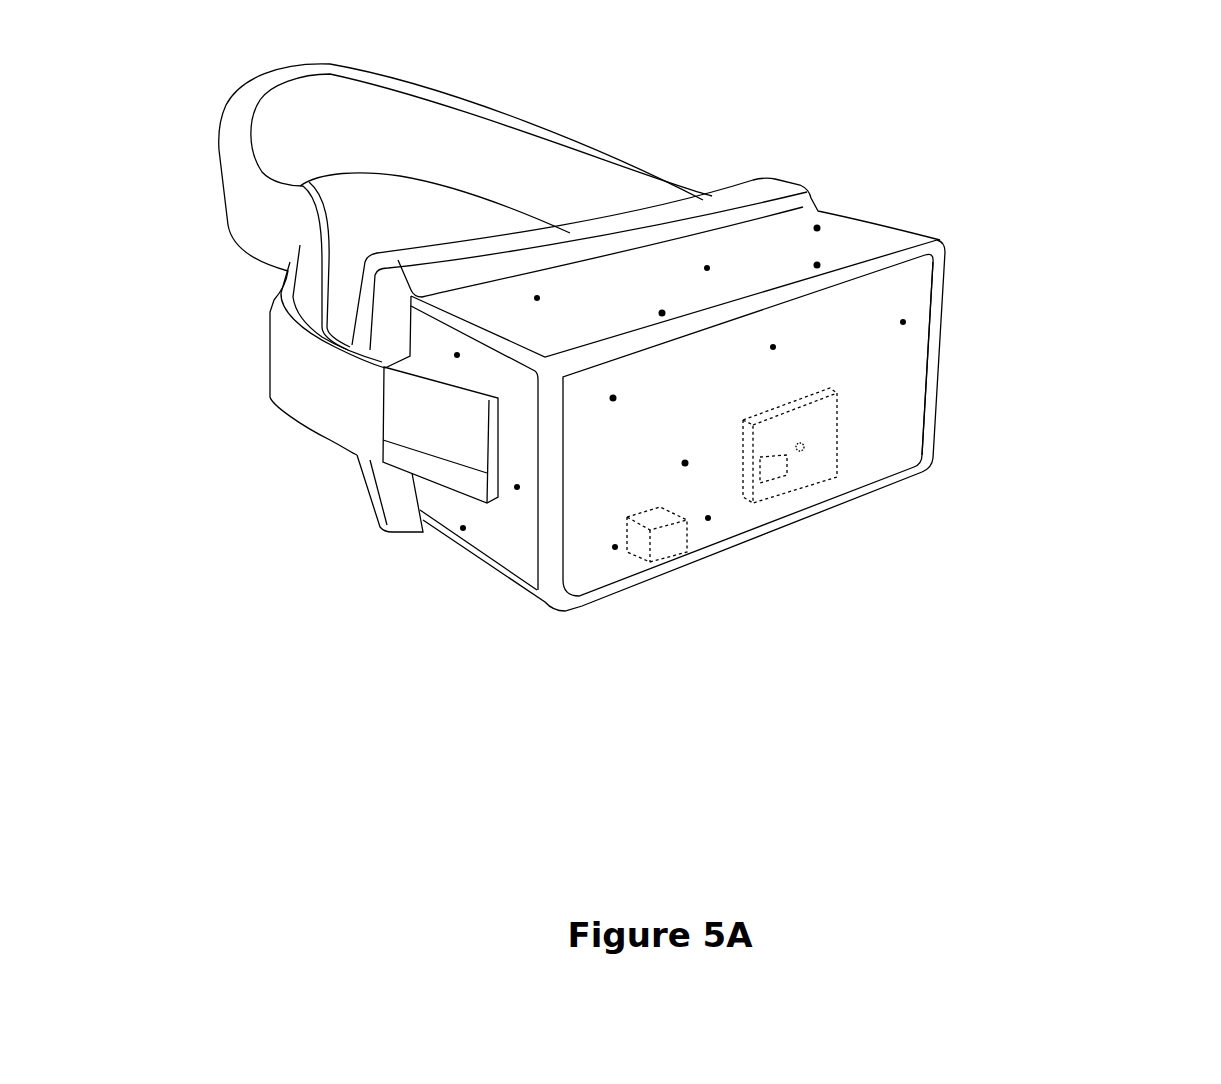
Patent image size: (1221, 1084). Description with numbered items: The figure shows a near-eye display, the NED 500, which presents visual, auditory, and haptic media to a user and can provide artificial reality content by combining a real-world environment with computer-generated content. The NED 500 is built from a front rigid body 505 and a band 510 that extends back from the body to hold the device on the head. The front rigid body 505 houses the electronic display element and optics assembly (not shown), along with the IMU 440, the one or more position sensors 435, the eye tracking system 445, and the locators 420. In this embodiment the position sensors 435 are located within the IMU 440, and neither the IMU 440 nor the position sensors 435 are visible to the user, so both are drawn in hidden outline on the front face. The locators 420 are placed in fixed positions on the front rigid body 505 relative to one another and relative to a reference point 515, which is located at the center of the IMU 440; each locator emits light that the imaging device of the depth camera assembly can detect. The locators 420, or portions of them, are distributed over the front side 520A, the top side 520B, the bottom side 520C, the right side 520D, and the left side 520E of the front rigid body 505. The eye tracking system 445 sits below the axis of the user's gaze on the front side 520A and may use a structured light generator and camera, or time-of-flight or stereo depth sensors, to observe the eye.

The NED 500 is at (197, 486).
The front rigid body 505 is at (671, 455).
The band 510 is at (589, 141).
The reference point 515 is at (804, 452).
The locators 420 is at (906, 427).
The position sensors 435 is at (773, 486).
The IMU 440 is at (982, 556).
The eye tracking system 445 is at (666, 553).
The front side 520A is at (598, 574).
The top side 520B is at (506, 300).
The bottom side 520C is at (454, 582).
The right side 520D is at (506, 533).
The left side 520E is at (905, 225).